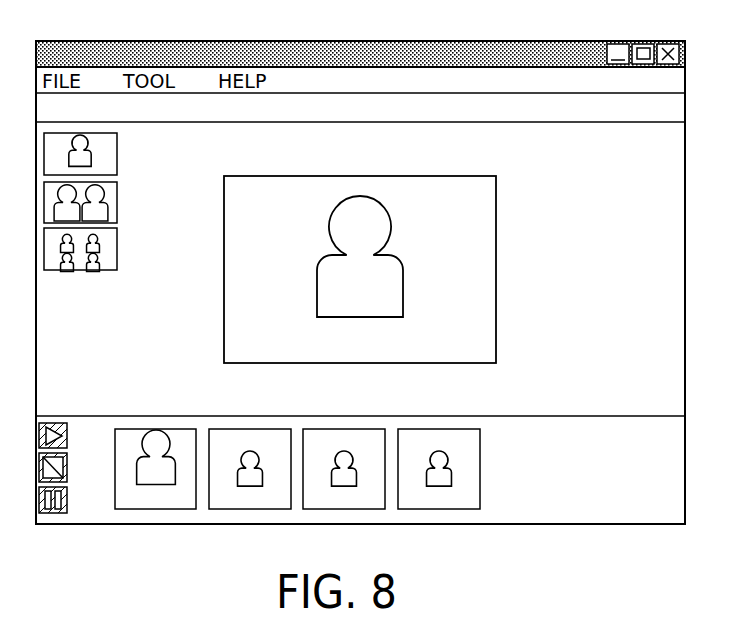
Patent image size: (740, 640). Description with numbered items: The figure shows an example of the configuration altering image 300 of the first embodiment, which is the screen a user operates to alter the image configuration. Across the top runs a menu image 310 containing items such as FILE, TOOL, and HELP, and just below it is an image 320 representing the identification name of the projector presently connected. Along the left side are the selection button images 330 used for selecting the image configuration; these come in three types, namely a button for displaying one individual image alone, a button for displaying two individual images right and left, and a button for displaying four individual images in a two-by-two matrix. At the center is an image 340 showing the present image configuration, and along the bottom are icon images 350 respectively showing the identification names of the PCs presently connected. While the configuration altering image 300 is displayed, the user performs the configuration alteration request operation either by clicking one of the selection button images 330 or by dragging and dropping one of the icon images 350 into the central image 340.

The configuration altering image 300 is at (637, 42).
The menu image 310 is at (190, 57).
The image representing an identification name of the projector 320 is at (277, 105).
The selection button images 330 is at (129, 201).
The image showing the present image configuration 340 is at (508, 231).
The icon images 350 is at (493, 472).